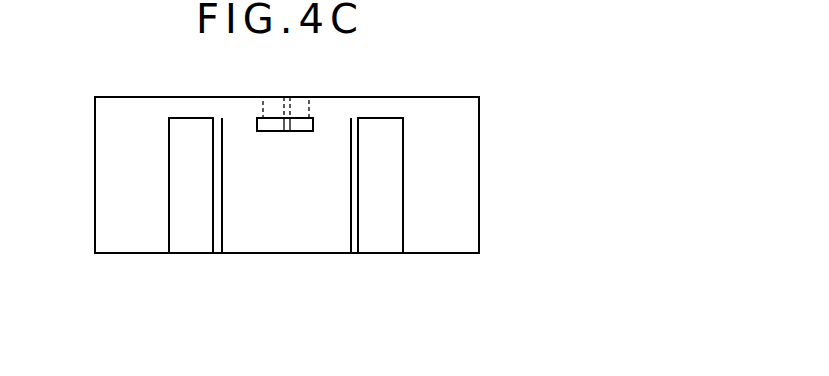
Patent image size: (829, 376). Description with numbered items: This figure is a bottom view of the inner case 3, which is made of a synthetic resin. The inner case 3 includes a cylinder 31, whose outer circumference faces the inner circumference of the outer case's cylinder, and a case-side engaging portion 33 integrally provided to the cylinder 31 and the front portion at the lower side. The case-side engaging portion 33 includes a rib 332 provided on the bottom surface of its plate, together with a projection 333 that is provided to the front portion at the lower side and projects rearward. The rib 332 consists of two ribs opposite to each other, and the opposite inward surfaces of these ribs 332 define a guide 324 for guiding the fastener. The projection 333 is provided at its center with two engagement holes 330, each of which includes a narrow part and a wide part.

The inner case 3 is at (500, 101).
The cylinder 31 is at (94, 192).
The guide 324 is at (224, 182).
The case-side engaging portion 33 is at (293, 137).
The engagement holes 330 is at (295, 108).
The rib 332 is at (228, 222).
The projection 333 is at (313, 125).